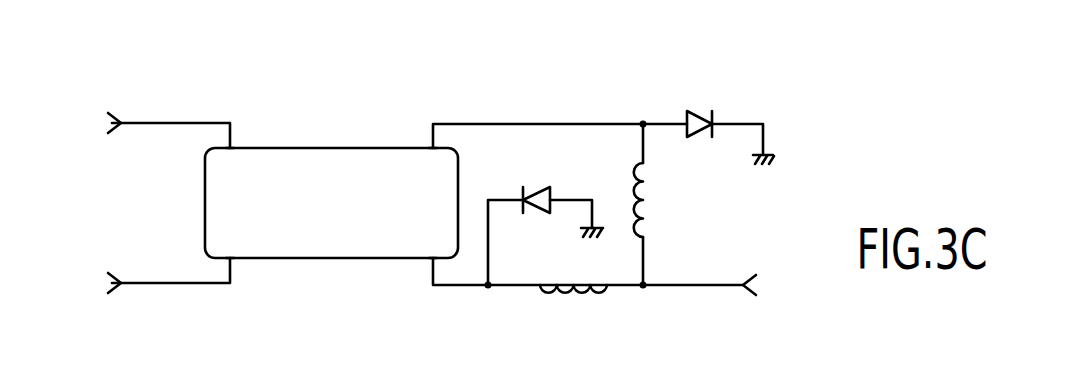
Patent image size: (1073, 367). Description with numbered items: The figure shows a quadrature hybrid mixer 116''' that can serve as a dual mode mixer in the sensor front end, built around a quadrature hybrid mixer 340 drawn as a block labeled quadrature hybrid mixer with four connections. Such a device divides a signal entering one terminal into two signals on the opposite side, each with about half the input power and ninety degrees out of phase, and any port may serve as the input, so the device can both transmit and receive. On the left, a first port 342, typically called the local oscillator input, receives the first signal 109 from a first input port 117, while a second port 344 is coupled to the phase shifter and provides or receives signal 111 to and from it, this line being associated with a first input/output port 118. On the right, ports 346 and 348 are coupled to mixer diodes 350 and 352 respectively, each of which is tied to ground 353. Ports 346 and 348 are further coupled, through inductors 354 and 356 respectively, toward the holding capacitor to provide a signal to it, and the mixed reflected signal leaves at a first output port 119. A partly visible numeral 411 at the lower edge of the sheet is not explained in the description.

The first signal 109 is at (178, 285).
The signal 111 is at (203, 122).
The quadrature hybrid mixer 116''' is at (949, 99).
The first input port 117 is at (120, 282).
The first input/output port 118 is at (121, 123).
The first output port 119 is at (743, 290).
The quadrature hybrid mixer 340 is at (338, 148).
The first port 342 is at (232, 270).
The second port 344 is at (232, 140).
The port 346 is at (433, 140).
The port 348 is at (433, 270).
The mixer diode 350 is at (692, 114).
The mixer diode 352 is at (551, 193).
The ground 353 is at (584, 232).
The inductor 354 is at (646, 203).
The inductor 356 is at (565, 292).
The reference numeral (partially visible) 411 is at (971, 361).